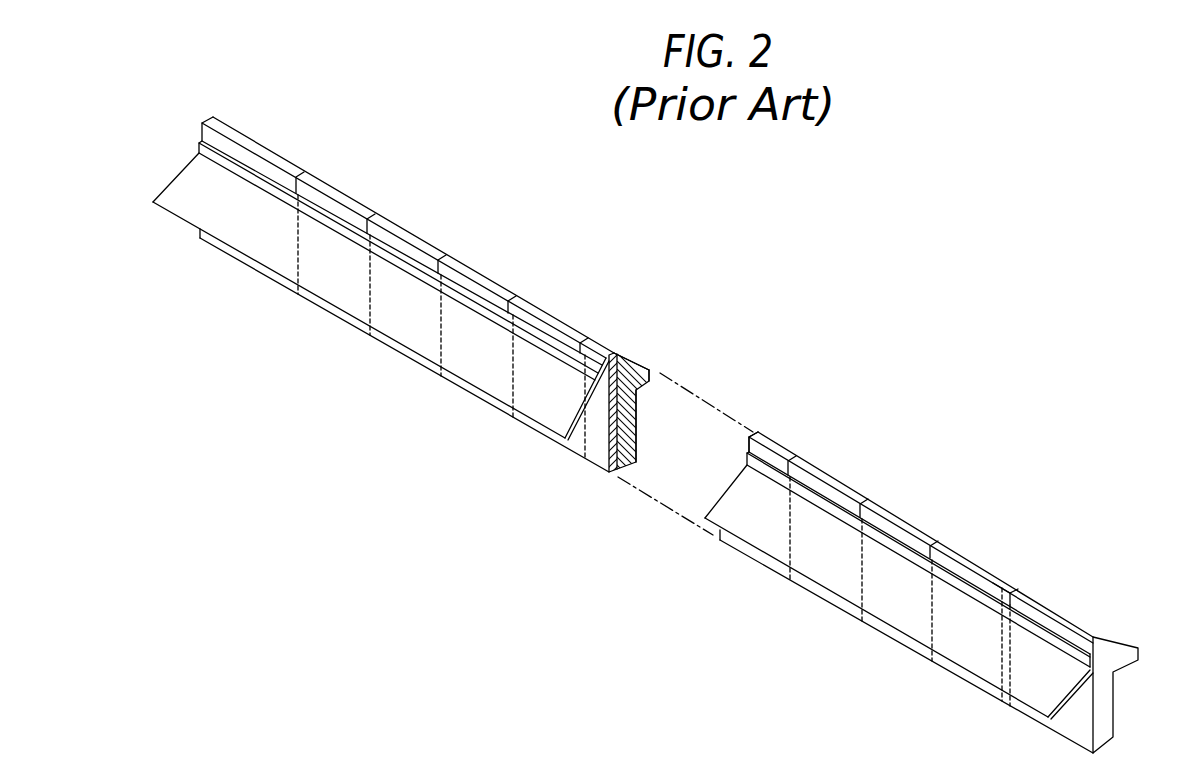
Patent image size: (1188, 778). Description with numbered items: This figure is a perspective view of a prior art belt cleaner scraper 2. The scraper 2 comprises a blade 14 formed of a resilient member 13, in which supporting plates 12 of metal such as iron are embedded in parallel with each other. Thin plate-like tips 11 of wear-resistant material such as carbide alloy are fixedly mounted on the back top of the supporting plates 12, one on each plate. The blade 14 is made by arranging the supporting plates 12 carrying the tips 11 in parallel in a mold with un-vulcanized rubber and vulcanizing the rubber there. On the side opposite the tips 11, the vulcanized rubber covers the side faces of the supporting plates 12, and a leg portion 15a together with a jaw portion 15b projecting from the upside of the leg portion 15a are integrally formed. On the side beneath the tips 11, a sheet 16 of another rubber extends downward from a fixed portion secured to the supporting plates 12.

The scraper 2 is at (758, 360).
The tip 11 is at (333, 203).
The supporting plate 12 is at (343, 285).
The resilient member 13 is at (640, 408).
The blade 14 is at (779, 438).
The leg portion 15a is at (637, 430).
The jaw portion 15b is at (636, 366).
The sheet 16 is at (240, 225).